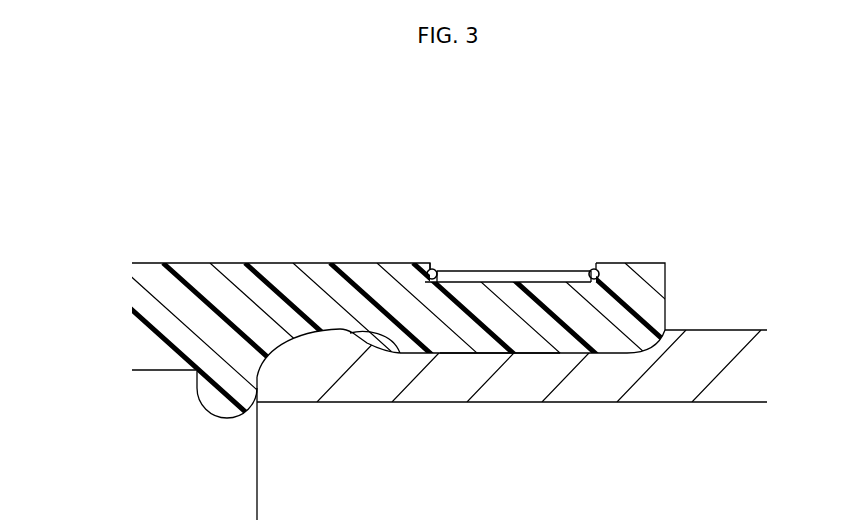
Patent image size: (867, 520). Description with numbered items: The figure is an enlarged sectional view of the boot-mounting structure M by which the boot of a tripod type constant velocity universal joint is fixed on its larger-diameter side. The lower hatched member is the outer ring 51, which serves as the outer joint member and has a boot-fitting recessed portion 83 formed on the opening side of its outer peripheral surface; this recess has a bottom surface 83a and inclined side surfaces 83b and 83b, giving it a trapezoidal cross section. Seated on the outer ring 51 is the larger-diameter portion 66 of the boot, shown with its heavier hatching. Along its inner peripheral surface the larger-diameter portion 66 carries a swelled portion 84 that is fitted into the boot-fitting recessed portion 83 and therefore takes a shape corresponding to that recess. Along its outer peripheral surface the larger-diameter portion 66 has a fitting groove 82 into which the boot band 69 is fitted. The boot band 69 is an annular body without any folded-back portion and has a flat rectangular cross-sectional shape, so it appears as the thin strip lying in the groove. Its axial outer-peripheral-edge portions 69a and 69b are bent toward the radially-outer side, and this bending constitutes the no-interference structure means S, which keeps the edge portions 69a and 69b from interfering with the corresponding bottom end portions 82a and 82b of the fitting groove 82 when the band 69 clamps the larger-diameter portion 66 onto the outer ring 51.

The outer ring 51 is at (743, 323).
The larger-diameter portion 66 is at (388, 301).
The boot band 69 is at (483, 255).
The axial outer-peripheral-edge portion 69a is at (596, 263).
The axial outer-peripheral-edge portion 69b is at (437, 266).
The fitting groove 82 is at (502, 275).
The bottom end portion 82a is at (588, 262).
The bottom end portion 82b is at (442, 271).
The boot-fitting recessed portion 83 is at (600, 350).
The bottom surface 83a is at (487, 343).
The inclined side surface 83b is at (402, 342).
The swelled portion 84 is at (545, 341).
The no-interference structure means S is at (441, 255).
The boot-mounting structure M is at (548, 249).